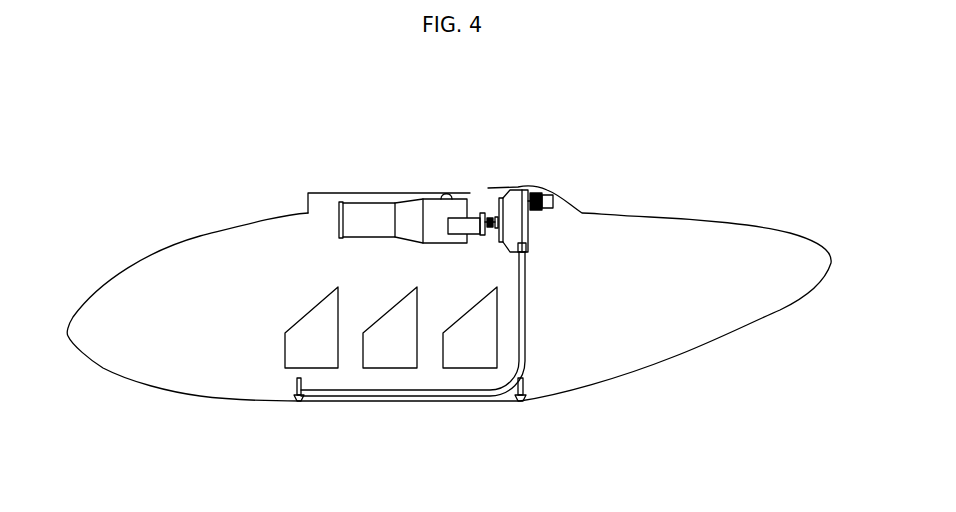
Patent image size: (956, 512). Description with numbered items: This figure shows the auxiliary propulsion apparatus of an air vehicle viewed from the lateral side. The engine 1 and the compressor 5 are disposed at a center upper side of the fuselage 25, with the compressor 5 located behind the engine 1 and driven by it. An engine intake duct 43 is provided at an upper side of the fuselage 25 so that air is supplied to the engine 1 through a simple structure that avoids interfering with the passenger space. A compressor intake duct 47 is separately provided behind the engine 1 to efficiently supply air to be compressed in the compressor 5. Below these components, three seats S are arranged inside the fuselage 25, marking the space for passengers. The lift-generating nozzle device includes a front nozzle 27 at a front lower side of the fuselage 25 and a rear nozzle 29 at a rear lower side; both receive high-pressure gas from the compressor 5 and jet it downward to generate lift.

The engine 1 is at (367, 212).
The compressor 5 is at (525, 188).
The fuselage 25 is at (662, 363).
The front nozzle 27 is at (293, 401).
The rear nozzle 29 is at (522, 401).
The engine intake duct 43 is at (308, 205).
The compressor intake duct 47 is at (480, 176).
The seats S is at (455, 358).